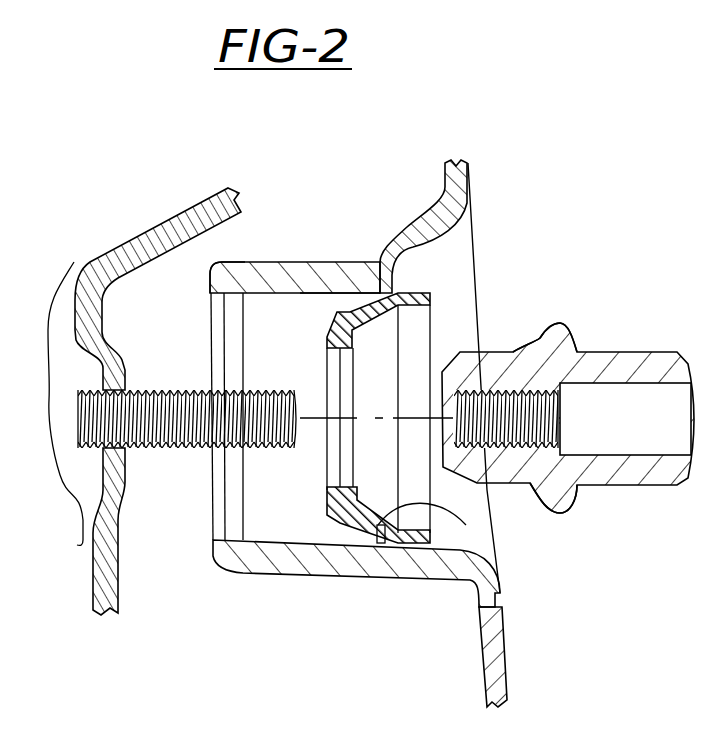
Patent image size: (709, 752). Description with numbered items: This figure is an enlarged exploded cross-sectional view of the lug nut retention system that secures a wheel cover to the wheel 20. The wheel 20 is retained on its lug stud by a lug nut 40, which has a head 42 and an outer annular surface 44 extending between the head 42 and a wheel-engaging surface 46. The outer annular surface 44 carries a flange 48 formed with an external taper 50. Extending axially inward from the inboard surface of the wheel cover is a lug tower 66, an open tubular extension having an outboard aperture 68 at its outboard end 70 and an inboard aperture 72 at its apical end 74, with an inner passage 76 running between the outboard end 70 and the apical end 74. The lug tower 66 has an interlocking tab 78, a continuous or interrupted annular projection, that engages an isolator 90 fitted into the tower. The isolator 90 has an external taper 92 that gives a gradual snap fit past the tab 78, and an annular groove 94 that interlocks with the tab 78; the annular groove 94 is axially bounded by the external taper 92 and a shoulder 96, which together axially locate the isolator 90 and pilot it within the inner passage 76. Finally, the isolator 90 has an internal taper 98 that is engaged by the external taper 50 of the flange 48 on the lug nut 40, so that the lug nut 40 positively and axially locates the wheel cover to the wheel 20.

The wheel 20 is at (117, 598).
The lug nut 40 is at (571, 361).
The head 42 is at (690, 355).
The outer annular surface 44 is at (630, 487).
The wheel-engaging surface 46 is at (456, 352).
The flange 48 is at (562, 323).
The external taper 50 is at (538, 490).
The lug tower 66 is at (350, 278).
The outboard aperture 68 is at (466, 253).
The outboard end 70 is at (456, 190).
The inboard aperture 72 is at (321, 462).
The apical end 74 is at (232, 268).
The inner passage 76 is at (293, 541).
The tab 78 is at (230, 308).
The isolator 90 is at (429, 446).
The external taper 92 is at (320, 292).
The annular groove 94 is at (388, 540).
The shoulder 96 is at (368, 548).
The internal taper 98 is at (466, 525).